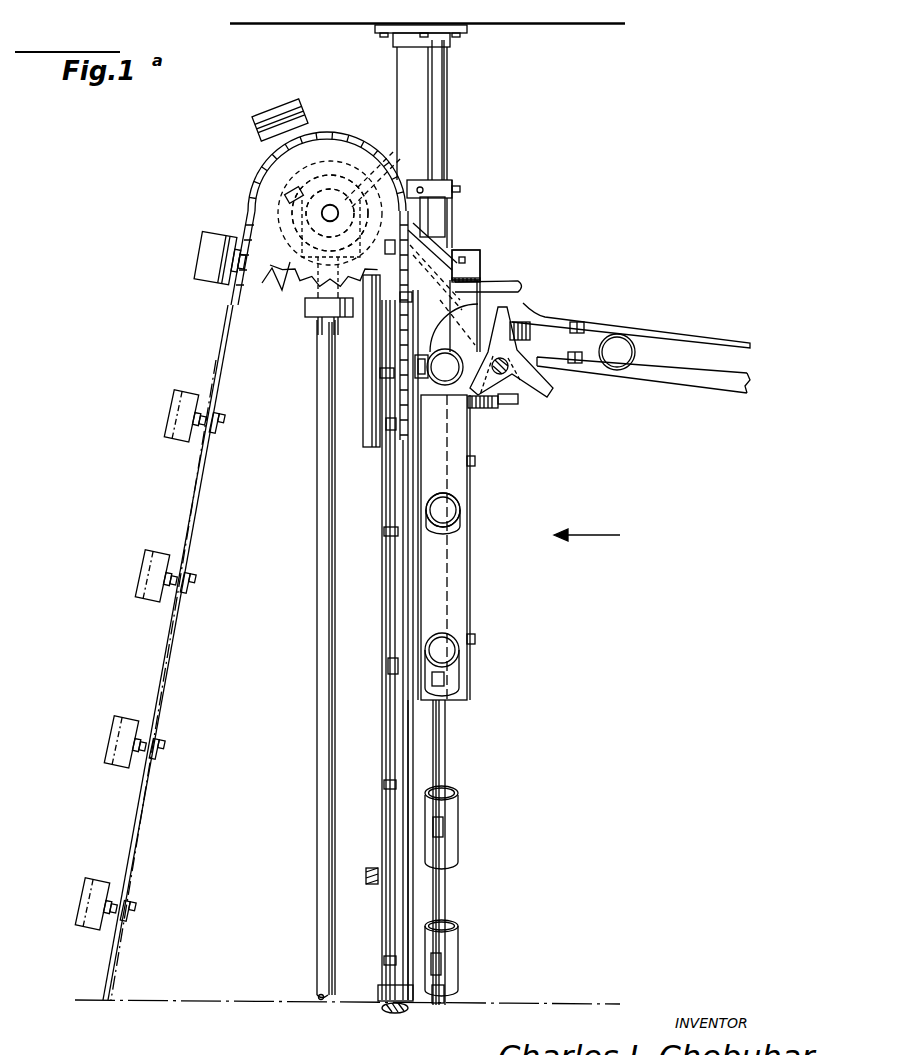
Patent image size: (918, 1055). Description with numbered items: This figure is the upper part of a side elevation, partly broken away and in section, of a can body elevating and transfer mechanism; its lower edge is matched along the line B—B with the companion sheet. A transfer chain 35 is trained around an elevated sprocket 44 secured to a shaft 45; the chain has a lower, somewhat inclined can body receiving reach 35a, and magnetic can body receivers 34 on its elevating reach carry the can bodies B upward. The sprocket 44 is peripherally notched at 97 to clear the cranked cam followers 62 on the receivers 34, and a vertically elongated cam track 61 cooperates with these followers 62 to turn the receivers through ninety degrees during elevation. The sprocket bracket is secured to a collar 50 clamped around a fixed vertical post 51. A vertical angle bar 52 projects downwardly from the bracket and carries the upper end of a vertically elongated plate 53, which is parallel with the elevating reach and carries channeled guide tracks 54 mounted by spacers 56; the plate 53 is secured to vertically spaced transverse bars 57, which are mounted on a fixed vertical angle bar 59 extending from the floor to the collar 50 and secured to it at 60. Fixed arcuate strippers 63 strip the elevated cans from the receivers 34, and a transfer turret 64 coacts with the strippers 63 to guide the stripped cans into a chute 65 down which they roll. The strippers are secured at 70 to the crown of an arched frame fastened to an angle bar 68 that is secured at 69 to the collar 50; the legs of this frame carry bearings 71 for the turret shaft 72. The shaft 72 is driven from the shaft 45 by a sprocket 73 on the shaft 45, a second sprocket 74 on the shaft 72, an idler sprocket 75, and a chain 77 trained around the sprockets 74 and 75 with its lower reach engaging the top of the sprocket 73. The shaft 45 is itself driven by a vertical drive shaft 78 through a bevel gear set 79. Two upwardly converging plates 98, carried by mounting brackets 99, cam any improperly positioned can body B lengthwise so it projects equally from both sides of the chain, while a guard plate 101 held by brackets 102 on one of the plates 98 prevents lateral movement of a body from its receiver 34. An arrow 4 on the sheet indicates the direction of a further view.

The direction arrow 4 is at (595, 537).
The can body receivers 34 is at (272, 106).
The transfer chain 35 is at (226, 326).
The can body receiving reach 35a is at (445, 1001).
The elevated sprocket 44 is at (262, 208).
The shaft 45 is at (304, 224).
The collar 50 is at (430, 270).
The fixed vertical post 51 is at (455, 158).
The vertical angle bar 52 is at (370, 447).
The vertically elongated plate 53 is at (381, 598).
The channeled guide tracks 54 is at (402, 734).
The spacers 56 is at (384, 531).
The transverse bars 57 is at (369, 875).
The fixed vertical angle bar 59 is at (378, 1003).
The securing point 60 is at (402, 300).
The cam track 61 is at (381, 921).
The cranked cam followers 62 is at (138, 914).
The fixed arcuate strippers 63 is at (521, 291).
The transfer turret 64 is at (562, 392).
The chute 65 is at (726, 326).
The angle bar 68 is at (481, 266).
The securing point 69 is at (476, 258).
The securing point 70 is at (482, 277).
The bearings 71 is at (492, 408).
The turret shaft 72 is at (520, 400).
The sprocket 73 is at (303, 209).
The second sprocket 74 is at (532, 352).
The idler sprocket 75 is at (340, 135).
The chain 77 is at (355, 163).
The vertical drive shaft 78 is at (317, 932).
The bevel gear set 79 is at (306, 265).
The peripheral notches 97 is at (266, 165).
The upwardly converging plates 98 is at (455, 596).
The mounting brackets 99 is at (386, 424).
The guard plate 101 is at (470, 507).
The brackets 102 is at (478, 462).
The can bodies B is at (452, 352).